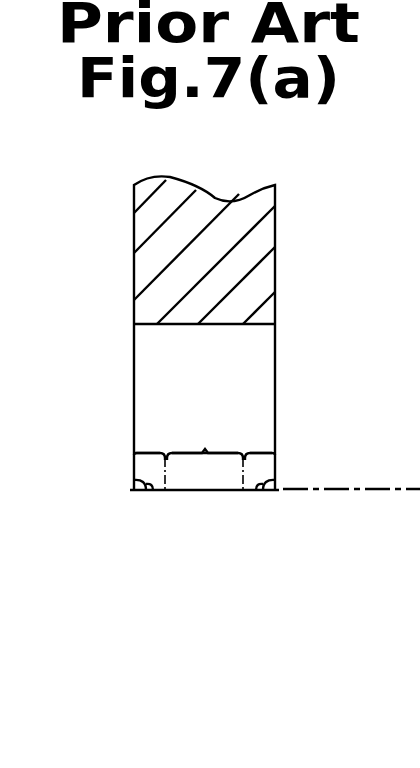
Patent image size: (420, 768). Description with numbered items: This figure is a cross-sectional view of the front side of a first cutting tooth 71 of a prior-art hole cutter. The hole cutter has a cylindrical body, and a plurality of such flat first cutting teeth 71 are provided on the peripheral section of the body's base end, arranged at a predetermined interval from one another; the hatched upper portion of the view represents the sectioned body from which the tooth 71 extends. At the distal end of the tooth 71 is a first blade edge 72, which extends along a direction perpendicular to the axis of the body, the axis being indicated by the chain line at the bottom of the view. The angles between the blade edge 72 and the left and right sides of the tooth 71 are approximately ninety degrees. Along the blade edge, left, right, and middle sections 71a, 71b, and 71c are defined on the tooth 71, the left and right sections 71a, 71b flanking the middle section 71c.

The first cutting tooth 71 is at (275, 348).
The left section 71a is at (150, 453).
The right section 71b is at (258, 453).
The middle section 71c is at (205, 424).
The first blade edge 72 is at (200, 490).